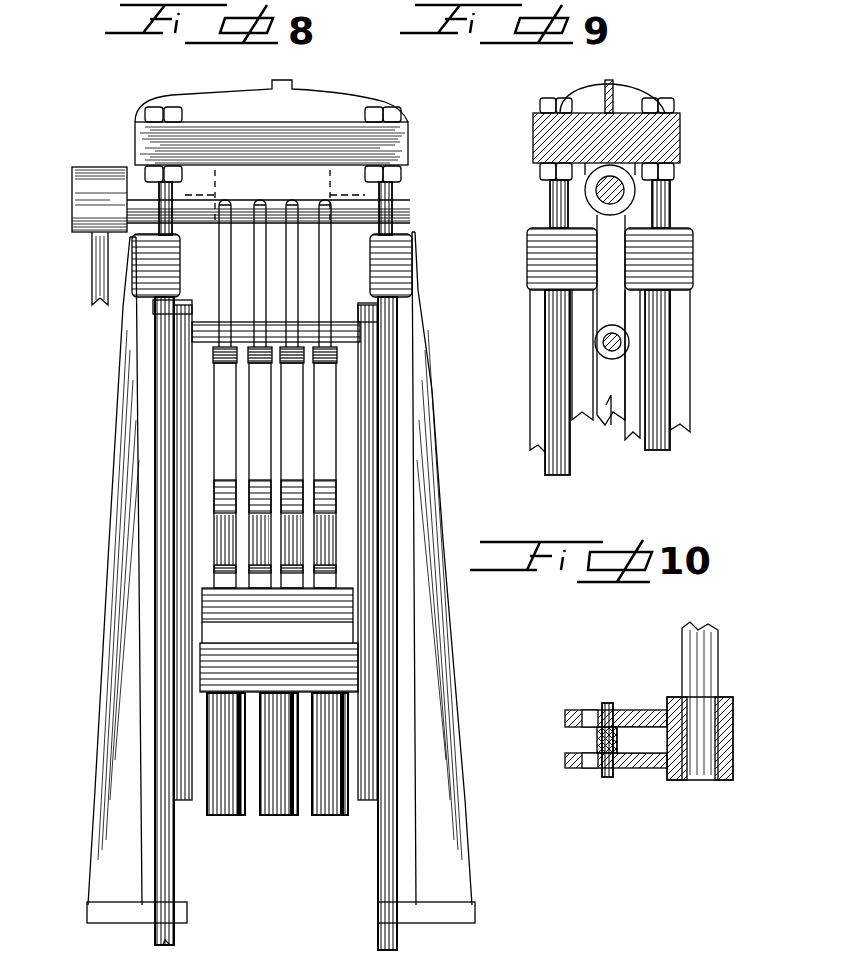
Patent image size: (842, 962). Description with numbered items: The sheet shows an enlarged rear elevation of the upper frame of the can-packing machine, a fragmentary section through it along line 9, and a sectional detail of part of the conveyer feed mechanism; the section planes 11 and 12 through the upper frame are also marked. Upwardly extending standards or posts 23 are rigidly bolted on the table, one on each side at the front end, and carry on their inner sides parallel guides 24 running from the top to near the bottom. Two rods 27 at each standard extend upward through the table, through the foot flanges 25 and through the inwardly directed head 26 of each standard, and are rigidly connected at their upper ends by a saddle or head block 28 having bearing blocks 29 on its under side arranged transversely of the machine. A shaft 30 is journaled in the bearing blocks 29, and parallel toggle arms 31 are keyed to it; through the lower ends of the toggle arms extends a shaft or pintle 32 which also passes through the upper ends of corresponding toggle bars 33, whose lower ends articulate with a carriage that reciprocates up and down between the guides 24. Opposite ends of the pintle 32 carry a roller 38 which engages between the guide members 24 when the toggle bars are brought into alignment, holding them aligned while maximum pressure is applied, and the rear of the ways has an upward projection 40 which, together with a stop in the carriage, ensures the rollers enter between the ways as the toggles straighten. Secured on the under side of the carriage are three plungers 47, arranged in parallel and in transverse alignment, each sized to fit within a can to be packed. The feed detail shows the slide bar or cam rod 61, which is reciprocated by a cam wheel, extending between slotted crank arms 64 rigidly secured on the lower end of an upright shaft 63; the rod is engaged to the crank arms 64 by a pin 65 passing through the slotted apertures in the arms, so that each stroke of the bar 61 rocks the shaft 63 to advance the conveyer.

In FIG. 8, the section line 9— 9 is at (297, 600).
In FIG. 8, the section line 11— 11 is at (75, 286).
In FIG. 8, the section line 12— 12 is at (95, 448).
In FIG. 8, the standards or posts 23 is at (113, 713).
In FIG. 8, the parallel guides 24 is at (190, 400).
In FIG. 8, the foot flanges 25 is at (380, 907).
In FIG. 8, the inwardly directed head 26 is at (388, 253).
In FIG. 9, the inwardly directed head 26 is at (685, 270).
In FIG. 8, the rods 27 is at (176, 868).
In FIG. 9, the rods 27 is at (560, 393).
In FIG. 8, the saddle or head block 28 is at (343, 140).
In FIG. 9, the saddle or head block 28 is at (560, 138).
In FIG. 8, the bearing blocks 29 is at (148, 195).
In FIG. 9, the shaft 30 is at (620, 198).
In FIG. 8, the toggle arms 31 is at (227, 262).
In FIG. 9, the toggle arms 31 is at (590, 240).
In FIG. 9, the shaft or pintle 32 is at (620, 344).
In FIG. 8, the toggle bars 33 is at (285, 525).
In FIG. 9, the toggle bars 33 is at (611, 425).
In FIG. 8, the roller 38 is at (187, 332).
In FIG. 8, the upward projection 40 is at (180, 313).
In FIG. 8, the plungers 47 is at (330, 805).
In FIG. 10, the slide bar 61 is at (607, 770).
In FIG. 10, the upright shaft 63 is at (712, 640).
In FIG. 10, the slotted crank arms 64 is at (645, 710).
In FIG. 10, the pin 65 is at (606, 710).